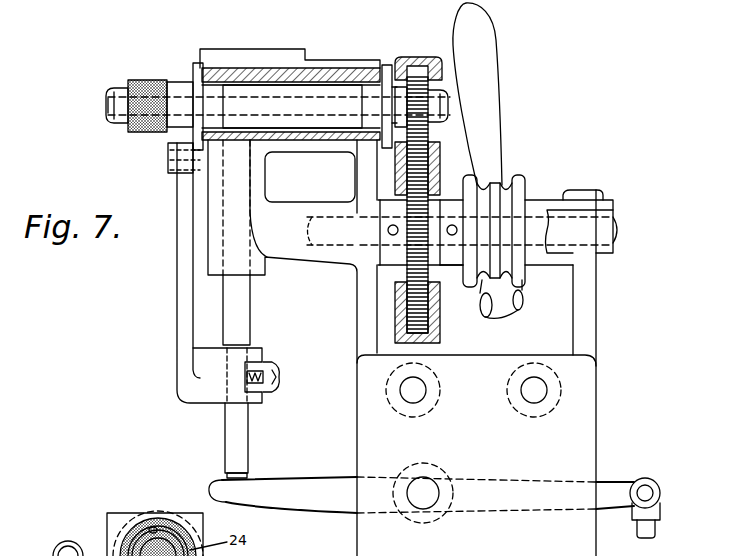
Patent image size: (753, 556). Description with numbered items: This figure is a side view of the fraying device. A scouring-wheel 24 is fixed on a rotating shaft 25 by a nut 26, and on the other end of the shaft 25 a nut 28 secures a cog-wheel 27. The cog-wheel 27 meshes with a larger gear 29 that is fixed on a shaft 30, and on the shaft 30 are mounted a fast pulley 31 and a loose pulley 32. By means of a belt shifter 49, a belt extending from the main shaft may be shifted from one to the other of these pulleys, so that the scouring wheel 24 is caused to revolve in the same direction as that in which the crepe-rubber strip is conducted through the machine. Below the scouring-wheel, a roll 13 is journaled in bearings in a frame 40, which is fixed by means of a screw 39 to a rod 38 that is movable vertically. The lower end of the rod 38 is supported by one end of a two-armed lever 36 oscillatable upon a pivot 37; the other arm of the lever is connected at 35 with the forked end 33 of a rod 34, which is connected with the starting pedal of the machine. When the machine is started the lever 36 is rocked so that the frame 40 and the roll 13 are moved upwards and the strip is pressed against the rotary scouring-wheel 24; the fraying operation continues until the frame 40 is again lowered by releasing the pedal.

The roll 13 is at (92, 550).
The scouring-wheel 24 is at (142, 80).
The rotating shaft 25 is at (305, 108).
The nut 26 is at (117, 87).
The cog-wheel 27 is at (415, 74).
The nut 28 is at (447, 95).
The gear 29 is at (441, 168).
The shaft 30 is at (337, 245).
The fast pulley 31 is at (455, 259).
The loose pulley 32 is at (526, 277).
The forked end 33 is at (633, 513).
The rod 34 is at (656, 528).
The connection 35 is at (651, 486).
The two-armed lever 36 is at (313, 481).
The pivot 37 is at (428, 487).
The rod 38 is at (251, 323).
The screw 39 is at (280, 383).
The frame 40 is at (180, 310).
The belt shifter 49 is at (495, 108).